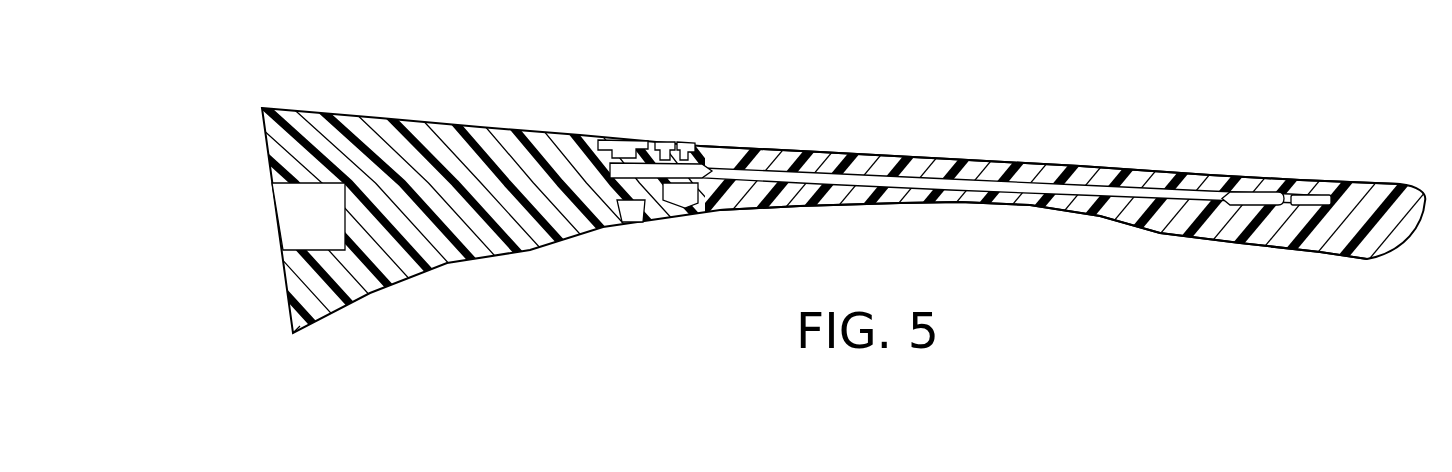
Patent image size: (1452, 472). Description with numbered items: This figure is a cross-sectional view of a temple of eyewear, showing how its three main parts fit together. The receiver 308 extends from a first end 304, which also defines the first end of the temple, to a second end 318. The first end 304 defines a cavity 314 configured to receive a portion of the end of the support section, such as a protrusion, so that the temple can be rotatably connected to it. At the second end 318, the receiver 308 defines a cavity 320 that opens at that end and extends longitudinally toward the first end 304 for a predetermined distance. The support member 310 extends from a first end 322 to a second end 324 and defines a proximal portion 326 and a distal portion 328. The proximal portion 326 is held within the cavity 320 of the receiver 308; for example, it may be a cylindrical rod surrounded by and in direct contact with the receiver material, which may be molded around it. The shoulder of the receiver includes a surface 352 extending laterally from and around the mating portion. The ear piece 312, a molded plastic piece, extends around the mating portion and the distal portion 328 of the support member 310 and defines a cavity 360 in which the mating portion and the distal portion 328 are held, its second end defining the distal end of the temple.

The first end 304 is at (297, 333).
The receiver 308 is at (420, 138).
The support member 310 is at (860, 180).
The ear piece 312 is at (1212, 183).
The cavity 314 is at (303, 212).
The second end 318 is at (692, 143).
The cavity 320 is at (673, 143).
The first end 322 is at (610, 205).
The second end 324 is at (1303, 205).
The proximal portion 326 is at (680, 203).
The distal portion 328 is at (1043, 202).
The surface 352 is at (607, 137).
The cavity 360 is at (1017, 160).